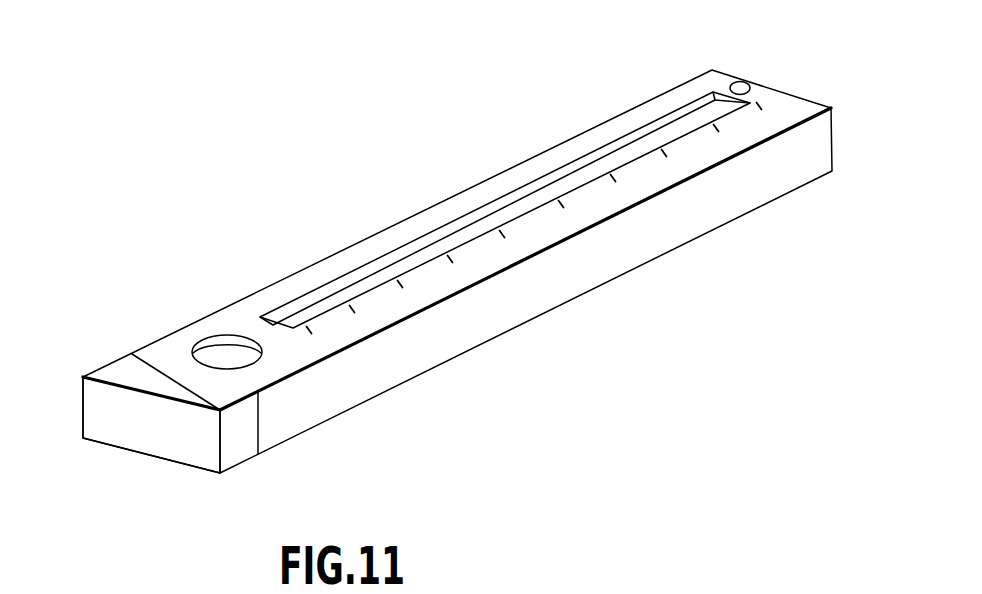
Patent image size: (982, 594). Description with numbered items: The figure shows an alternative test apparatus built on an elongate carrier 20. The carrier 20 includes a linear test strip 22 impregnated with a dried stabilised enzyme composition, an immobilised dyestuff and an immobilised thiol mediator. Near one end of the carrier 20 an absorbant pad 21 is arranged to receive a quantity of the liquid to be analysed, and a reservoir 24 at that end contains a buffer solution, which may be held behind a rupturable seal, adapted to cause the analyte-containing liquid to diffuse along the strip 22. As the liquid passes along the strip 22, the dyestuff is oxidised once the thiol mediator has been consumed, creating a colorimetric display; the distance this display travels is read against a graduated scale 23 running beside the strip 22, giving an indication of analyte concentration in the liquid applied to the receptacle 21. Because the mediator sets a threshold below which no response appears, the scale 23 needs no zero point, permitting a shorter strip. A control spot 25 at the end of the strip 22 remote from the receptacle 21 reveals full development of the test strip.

The elongate carrier 20 is at (465, 333).
The absorbant pad 21 is at (233, 358).
The linear test strip 22 is at (670, 133).
The graduated scale 23 is at (718, 160).
The reservoir 24 is at (135, 445).
The control spot 25 is at (743, 85).